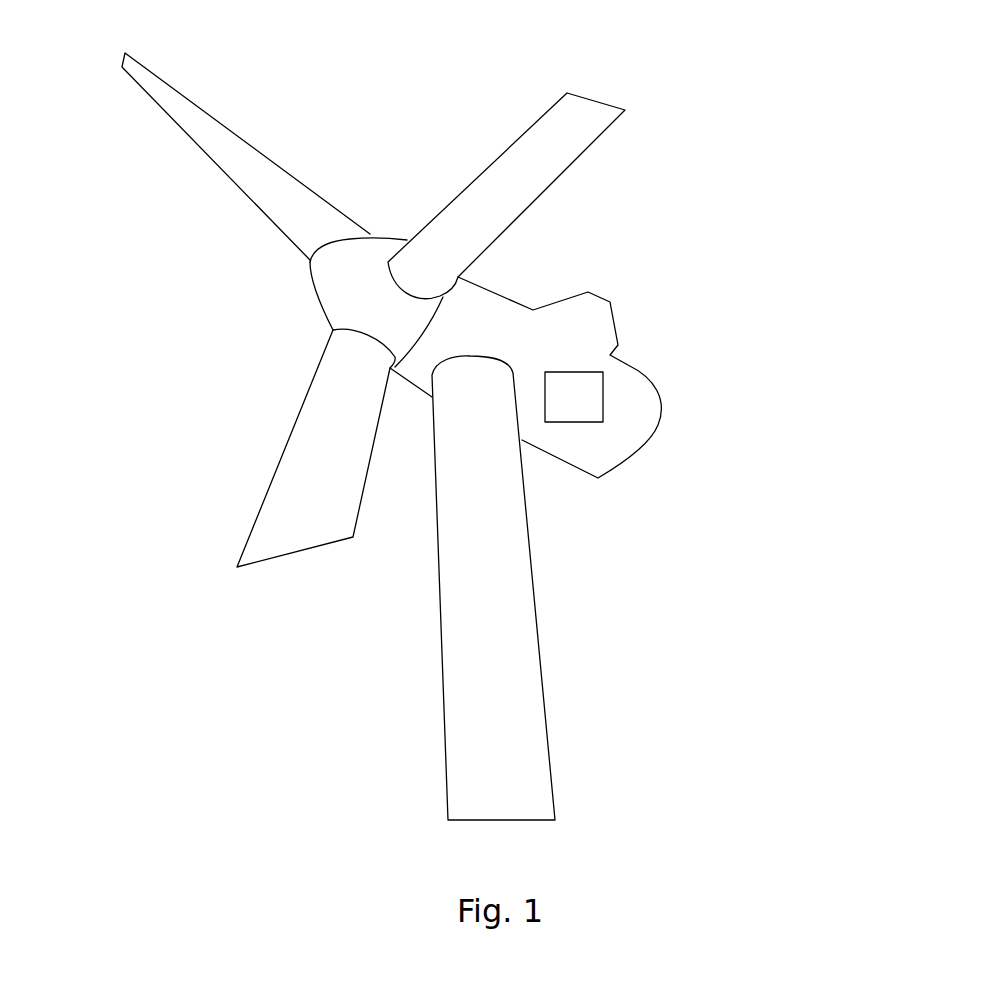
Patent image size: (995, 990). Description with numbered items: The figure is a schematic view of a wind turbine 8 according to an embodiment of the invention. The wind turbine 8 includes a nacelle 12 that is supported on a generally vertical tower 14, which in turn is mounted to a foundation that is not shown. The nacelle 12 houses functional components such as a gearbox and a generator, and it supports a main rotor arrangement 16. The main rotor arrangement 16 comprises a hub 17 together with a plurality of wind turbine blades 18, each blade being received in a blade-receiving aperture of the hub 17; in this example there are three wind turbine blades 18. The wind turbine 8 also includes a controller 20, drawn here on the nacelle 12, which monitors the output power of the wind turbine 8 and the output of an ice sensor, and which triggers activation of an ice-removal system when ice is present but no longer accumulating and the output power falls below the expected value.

The wind turbine 8 is at (449, 432).
The nacelle 12 is at (544, 361).
The tower 14 is at (520, 550).
The main rotor arrangement 16 is at (384, 318).
The hub 17 is at (333, 285).
The wind turbine blades 18 is at (158, 83).
The controller 20 is at (587, 387).